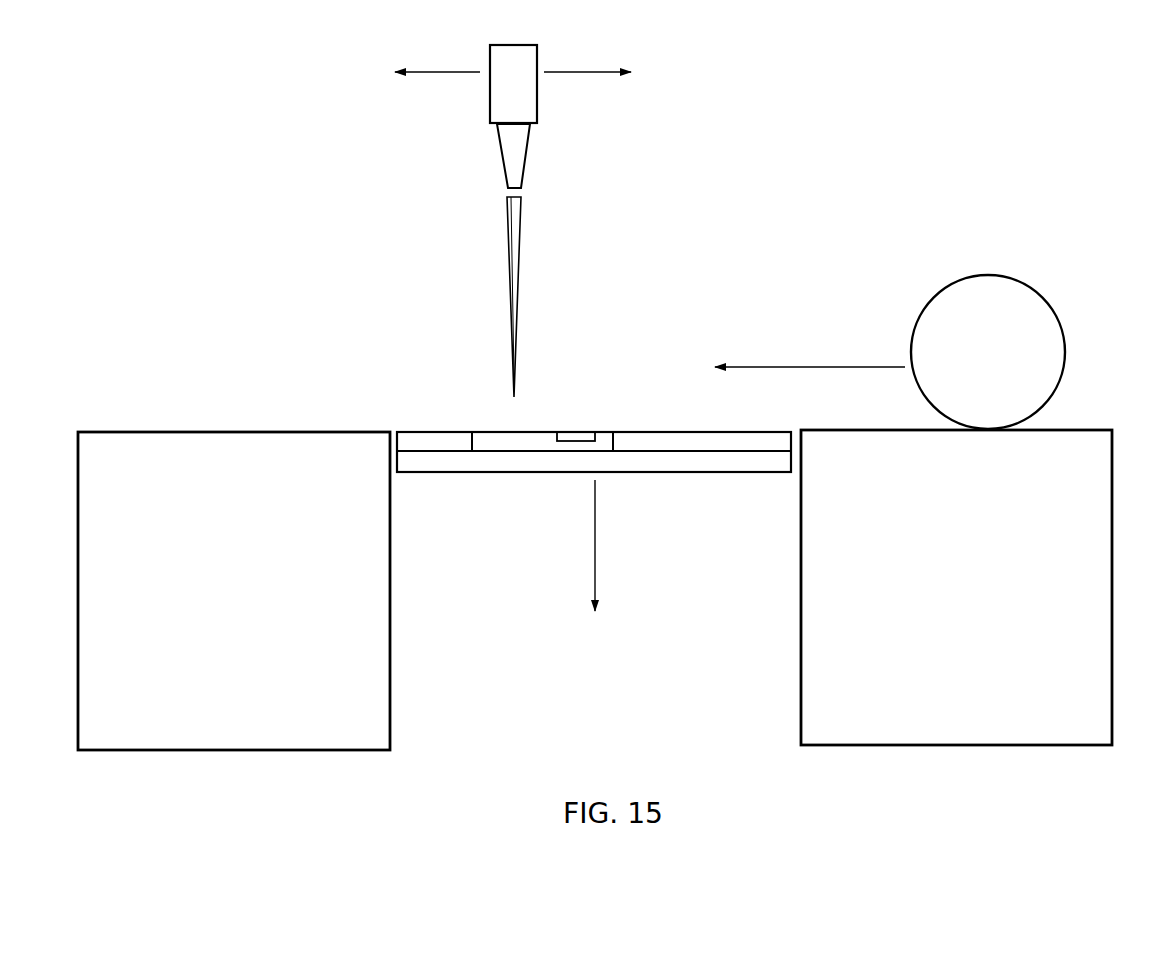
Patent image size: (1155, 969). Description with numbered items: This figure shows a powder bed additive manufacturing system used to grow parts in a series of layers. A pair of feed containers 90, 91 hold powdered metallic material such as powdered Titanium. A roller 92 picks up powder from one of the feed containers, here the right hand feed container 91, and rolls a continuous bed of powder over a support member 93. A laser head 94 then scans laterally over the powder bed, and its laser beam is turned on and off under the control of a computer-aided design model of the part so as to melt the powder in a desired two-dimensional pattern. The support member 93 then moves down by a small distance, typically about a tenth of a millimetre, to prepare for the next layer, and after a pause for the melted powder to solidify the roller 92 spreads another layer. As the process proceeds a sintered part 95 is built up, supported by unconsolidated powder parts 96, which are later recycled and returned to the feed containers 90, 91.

The feed container 90 is at (380, 645).
The feed container 91 is at (815, 615).
The roller 92 is at (930, 323).
The support member 93 is at (493, 465).
The laser head 94 is at (498, 99).
The sintered part 95 is at (533, 431).
The unconsolidated powder parts 96 is at (445, 430).